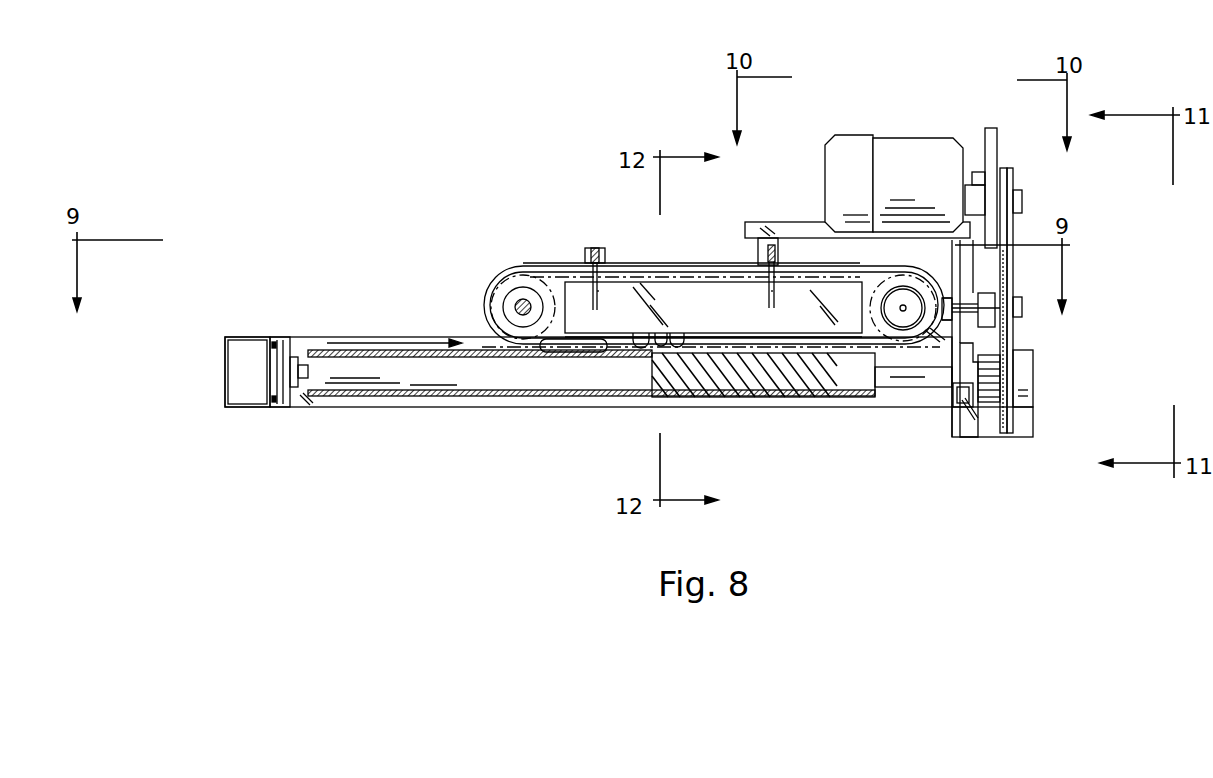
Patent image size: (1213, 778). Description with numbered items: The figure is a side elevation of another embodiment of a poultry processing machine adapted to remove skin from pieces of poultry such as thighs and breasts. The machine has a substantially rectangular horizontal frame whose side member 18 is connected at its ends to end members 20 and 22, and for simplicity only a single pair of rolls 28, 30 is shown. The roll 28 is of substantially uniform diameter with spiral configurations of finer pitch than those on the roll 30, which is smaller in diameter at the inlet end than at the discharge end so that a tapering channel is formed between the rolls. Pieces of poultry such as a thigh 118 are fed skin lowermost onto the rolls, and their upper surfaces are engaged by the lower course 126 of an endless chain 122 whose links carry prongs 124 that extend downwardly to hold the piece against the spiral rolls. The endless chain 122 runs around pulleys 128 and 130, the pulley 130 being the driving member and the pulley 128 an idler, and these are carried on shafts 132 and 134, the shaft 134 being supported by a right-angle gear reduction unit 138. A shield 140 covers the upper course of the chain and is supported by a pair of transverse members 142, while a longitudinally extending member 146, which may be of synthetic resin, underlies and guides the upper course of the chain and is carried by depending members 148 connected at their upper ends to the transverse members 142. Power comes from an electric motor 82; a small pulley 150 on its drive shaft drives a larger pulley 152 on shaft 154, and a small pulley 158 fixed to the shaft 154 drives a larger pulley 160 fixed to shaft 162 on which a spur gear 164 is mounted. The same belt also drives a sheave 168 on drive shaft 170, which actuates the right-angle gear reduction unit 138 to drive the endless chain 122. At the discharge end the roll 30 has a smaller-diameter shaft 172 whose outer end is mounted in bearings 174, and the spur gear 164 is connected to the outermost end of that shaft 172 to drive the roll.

The side member 18 is at (588, 390).
The end member 20 is at (242, 410).
The end member 22 is at (975, 438).
The roll 28 is at (386, 397).
The roll 30 is at (497, 407).
The electric motor 82 is at (940, 135).
The thigh 118 is at (562, 352).
The endless chain 122 is at (724, 275).
The prongs 124 is at (642, 348).
The lower course 126 is at (770, 332).
The idler pulley 128 is at (549, 290).
The driving pulley 130 is at (876, 303).
The shaft 132 is at (520, 302).
The shaft 134 is at (905, 306).
The right-angle gear reduction unit 138 is at (946, 333).
The shield 140 is at (651, 266).
The transverse members 142 is at (595, 248).
The longitudinally extending member 146 is at (720, 321).
The rod ends 148 is at (603, 292).
The small pulley 150 is at (1002, 176).
The larger pulley 152 is at (998, 131).
The shaft 154 is at (968, 210).
The small pulley 158 is at (1013, 182).
The larger pulley 160 is at (1013, 341).
The shaft 162 is at (966, 392).
The spur gear 164 is at (990, 402).
The sheave 168 is at (1013, 299).
The drive shaft 170 is at (970, 306).
The shaft 172 is at (900, 390).
The bearings 174 is at (955, 396).